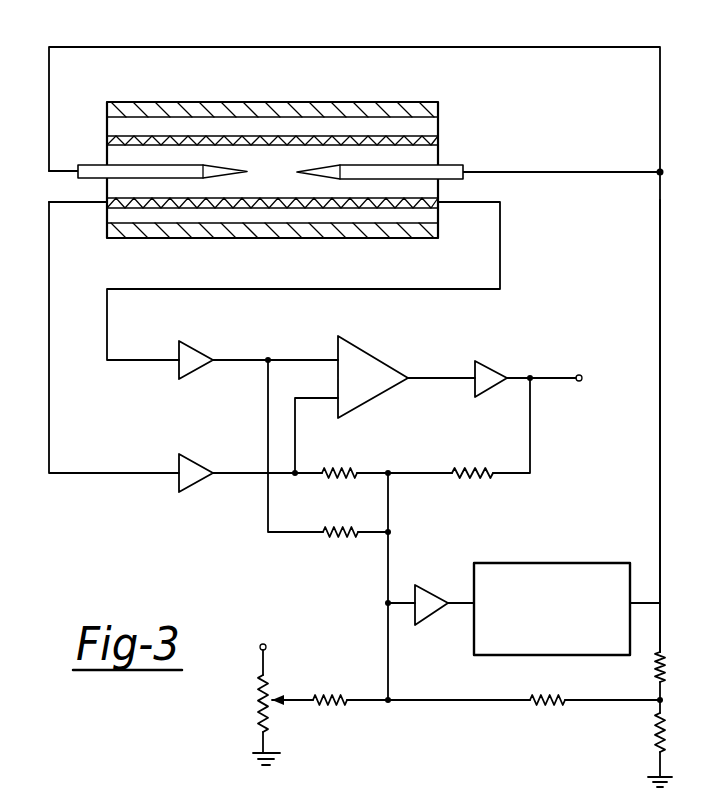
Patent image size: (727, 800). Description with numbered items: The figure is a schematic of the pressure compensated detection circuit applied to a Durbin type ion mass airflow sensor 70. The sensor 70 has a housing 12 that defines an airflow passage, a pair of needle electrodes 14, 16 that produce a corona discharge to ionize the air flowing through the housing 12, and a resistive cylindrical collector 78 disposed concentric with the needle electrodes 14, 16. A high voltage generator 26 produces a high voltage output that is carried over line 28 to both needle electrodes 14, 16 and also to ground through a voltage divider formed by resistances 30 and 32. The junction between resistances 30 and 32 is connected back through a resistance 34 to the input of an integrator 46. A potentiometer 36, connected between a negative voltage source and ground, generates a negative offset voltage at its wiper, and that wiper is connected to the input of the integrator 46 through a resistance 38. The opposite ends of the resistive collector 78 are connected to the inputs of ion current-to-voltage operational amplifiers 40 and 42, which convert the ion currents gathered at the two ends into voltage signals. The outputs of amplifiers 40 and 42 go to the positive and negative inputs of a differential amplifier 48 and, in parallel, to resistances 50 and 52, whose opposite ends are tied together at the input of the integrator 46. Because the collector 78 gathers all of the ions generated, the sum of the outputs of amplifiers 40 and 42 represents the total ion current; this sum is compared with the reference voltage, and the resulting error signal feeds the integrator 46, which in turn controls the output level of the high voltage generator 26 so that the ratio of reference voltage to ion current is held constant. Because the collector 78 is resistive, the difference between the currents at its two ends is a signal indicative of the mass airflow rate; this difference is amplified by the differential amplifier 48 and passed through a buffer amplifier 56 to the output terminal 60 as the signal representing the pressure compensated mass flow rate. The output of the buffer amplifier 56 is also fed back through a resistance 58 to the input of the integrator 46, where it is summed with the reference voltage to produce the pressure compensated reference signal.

The Durbin type ion mass airflow sensor 70 is at (416, 92).
The housing 12 is at (362, 73).
The resistive cylindrical collector 78 is at (194, 138).
The needle electrode 14 is at (85, 164).
The needle electrode 16 is at (452, 166).
The ion current-to-voltage operational amplifier 40 is at (190, 345).
The ion current-to-voltage operational amplifier 42 is at (192, 462).
The differential amplifier 48 is at (378, 352).
The buffer amplifier 56 is at (486, 361).
The integrator 46 is at (430, 587).
The resistance 50 is at (332, 470).
The resistance 58 is at (471, 470).
The resistance 52 is at (338, 538).
The resistance 38 is at (324, 697).
The resistance 34 is at (538, 697).
The resistance 30 is at (656, 670).
The resistance 32 is at (656, 737).
The potentiometer 36 is at (262, 708).
The high voltage generator 26 is at (574, 562).
The line 28 is at (657, 330).
The output terminal 60 is at (576, 385).